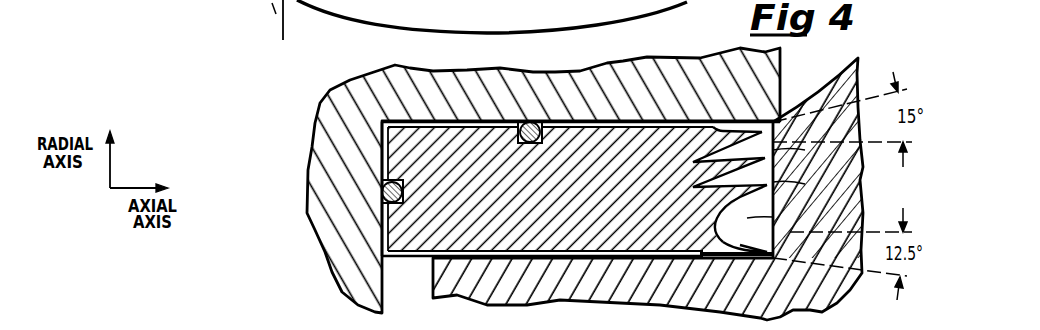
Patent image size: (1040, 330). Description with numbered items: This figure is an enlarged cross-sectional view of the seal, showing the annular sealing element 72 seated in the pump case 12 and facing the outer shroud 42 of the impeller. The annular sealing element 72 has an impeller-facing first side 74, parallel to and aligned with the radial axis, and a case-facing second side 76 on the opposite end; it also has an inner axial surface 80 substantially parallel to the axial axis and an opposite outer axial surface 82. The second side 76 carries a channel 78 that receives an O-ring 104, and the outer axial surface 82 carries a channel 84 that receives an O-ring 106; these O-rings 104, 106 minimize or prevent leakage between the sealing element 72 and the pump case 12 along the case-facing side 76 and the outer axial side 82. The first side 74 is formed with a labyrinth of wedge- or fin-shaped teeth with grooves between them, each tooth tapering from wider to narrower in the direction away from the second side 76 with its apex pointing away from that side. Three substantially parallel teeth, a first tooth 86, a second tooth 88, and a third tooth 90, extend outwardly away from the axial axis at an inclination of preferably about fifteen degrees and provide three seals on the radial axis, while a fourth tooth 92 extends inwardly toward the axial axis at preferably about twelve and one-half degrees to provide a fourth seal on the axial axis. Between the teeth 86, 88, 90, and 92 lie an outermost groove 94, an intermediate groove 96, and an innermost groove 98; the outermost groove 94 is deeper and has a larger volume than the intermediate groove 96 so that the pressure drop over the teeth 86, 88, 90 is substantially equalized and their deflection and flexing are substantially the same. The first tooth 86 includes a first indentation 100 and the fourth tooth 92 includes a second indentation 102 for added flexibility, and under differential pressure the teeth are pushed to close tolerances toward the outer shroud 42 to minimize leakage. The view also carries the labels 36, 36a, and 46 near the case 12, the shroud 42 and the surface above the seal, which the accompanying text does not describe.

The pump case 12 is at (652, 93).
The annular gap 36 is at (402, 285).
The gap region 36a is at (255, 20).
The outer shroud 42 is at (646, 298).
The rotor surface 46 is at (492, 164).
The annular sealing element 72 is at (593, 193).
The first side 74 is at (763, 243).
The second side 76 is at (382, 150).
The channel 78 is at (383, 184).
The inner axial surface 80 is at (538, 257).
The outer axial surface 82 is at (447, 122).
The channel 84 is at (522, 122).
The first tooth 86 is at (748, 128).
The second tooth 88 is at (765, 163).
The third tooth 90 is at (765, 195).
The fourth tooth 92 is at (733, 245).
The outermost groove 94 is at (773, 152).
The intermediate groove 96 is at (772, 182).
The innermost groove 98 is at (773, 217).
The first indentation 100 is at (730, 133).
The second indentation 102 is at (713, 256).
The O-ring 104 is at (382, 205).
The O-ring 106 is at (541, 110).